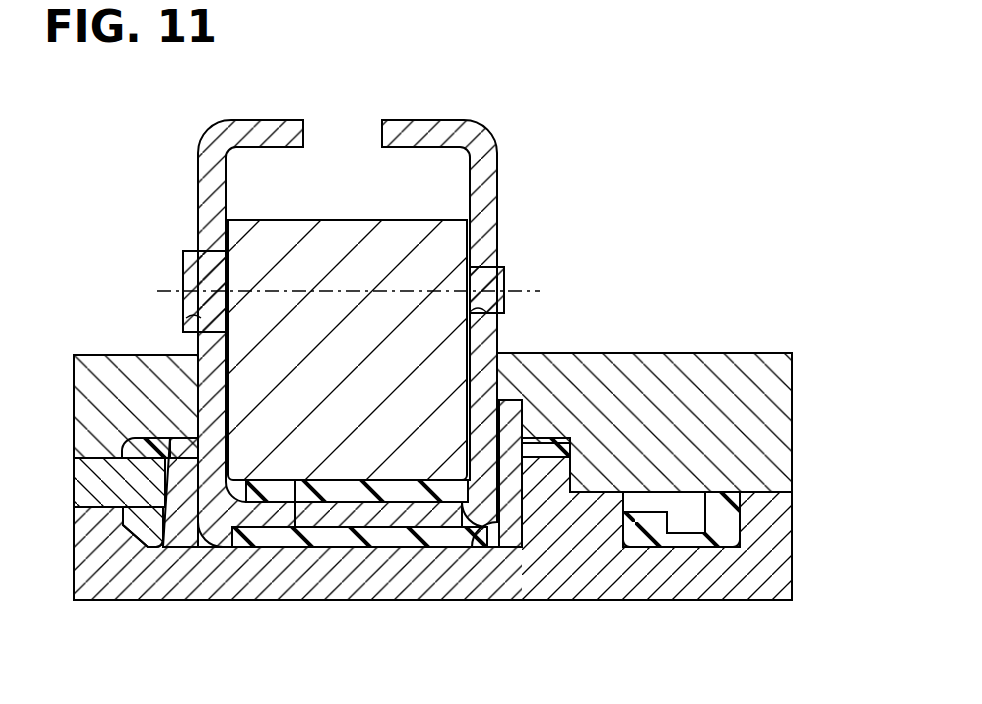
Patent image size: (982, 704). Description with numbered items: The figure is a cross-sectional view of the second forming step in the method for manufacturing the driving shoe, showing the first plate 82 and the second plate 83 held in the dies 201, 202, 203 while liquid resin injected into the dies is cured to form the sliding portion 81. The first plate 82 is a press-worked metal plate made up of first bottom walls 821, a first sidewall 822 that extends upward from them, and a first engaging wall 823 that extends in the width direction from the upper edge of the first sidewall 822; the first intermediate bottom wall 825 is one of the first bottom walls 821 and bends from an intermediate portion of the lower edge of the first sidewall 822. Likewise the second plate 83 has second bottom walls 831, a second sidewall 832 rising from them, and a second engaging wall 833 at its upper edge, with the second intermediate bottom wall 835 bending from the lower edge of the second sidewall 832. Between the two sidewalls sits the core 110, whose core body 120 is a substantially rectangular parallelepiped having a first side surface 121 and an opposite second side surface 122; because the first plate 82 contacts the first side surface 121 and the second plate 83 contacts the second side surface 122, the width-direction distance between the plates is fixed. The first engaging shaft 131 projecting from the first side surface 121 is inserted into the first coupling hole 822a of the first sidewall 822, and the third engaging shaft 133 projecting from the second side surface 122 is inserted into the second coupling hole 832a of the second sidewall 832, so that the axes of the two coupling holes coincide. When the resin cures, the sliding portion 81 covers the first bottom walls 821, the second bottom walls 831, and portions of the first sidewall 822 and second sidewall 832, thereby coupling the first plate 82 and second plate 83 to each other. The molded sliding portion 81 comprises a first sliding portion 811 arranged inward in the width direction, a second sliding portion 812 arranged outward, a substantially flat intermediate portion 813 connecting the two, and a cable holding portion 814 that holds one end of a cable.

The first plate 82 is at (230, 129).
The first engaging wall 823 is at (276, 119).
The first sidewall 822 is at (198, 176).
The first coupling hole 822a is at (192, 320).
The first intermediate bottom wall 825 is at (270, 537).
The first bottom walls 821 is at (350, 578).
The second plate 83 is at (408, 119).
The second engaging wall 833 is at (449, 119).
The second sidewall 832 is at (498, 186).
The second coupling hole 832a is at (470, 306).
The second intermediate bottom wall 835 is at (390, 540).
The second bottom walls 831 is at (359, 602).
The core body 120 is at (345, 218).
The core 110 is at (347, 321).
The first side surface 121 is at (226, 224).
The second side surface 122 is at (497, 332).
The first engaging shaft 131 is at (184, 262).
The third engaging shaft 133 is at (504, 272).
The sliding portion 81 is at (332, 524).
The first sliding portion 811 is at (140, 548).
The second sliding portion 812 is at (565, 446).
The intermediate portion 813 is at (318, 540).
The cable holding portion 814 is at (660, 545).
The die 201 is at (792, 548).
The die 202 is at (792, 425).
The die 203 is at (74, 488).